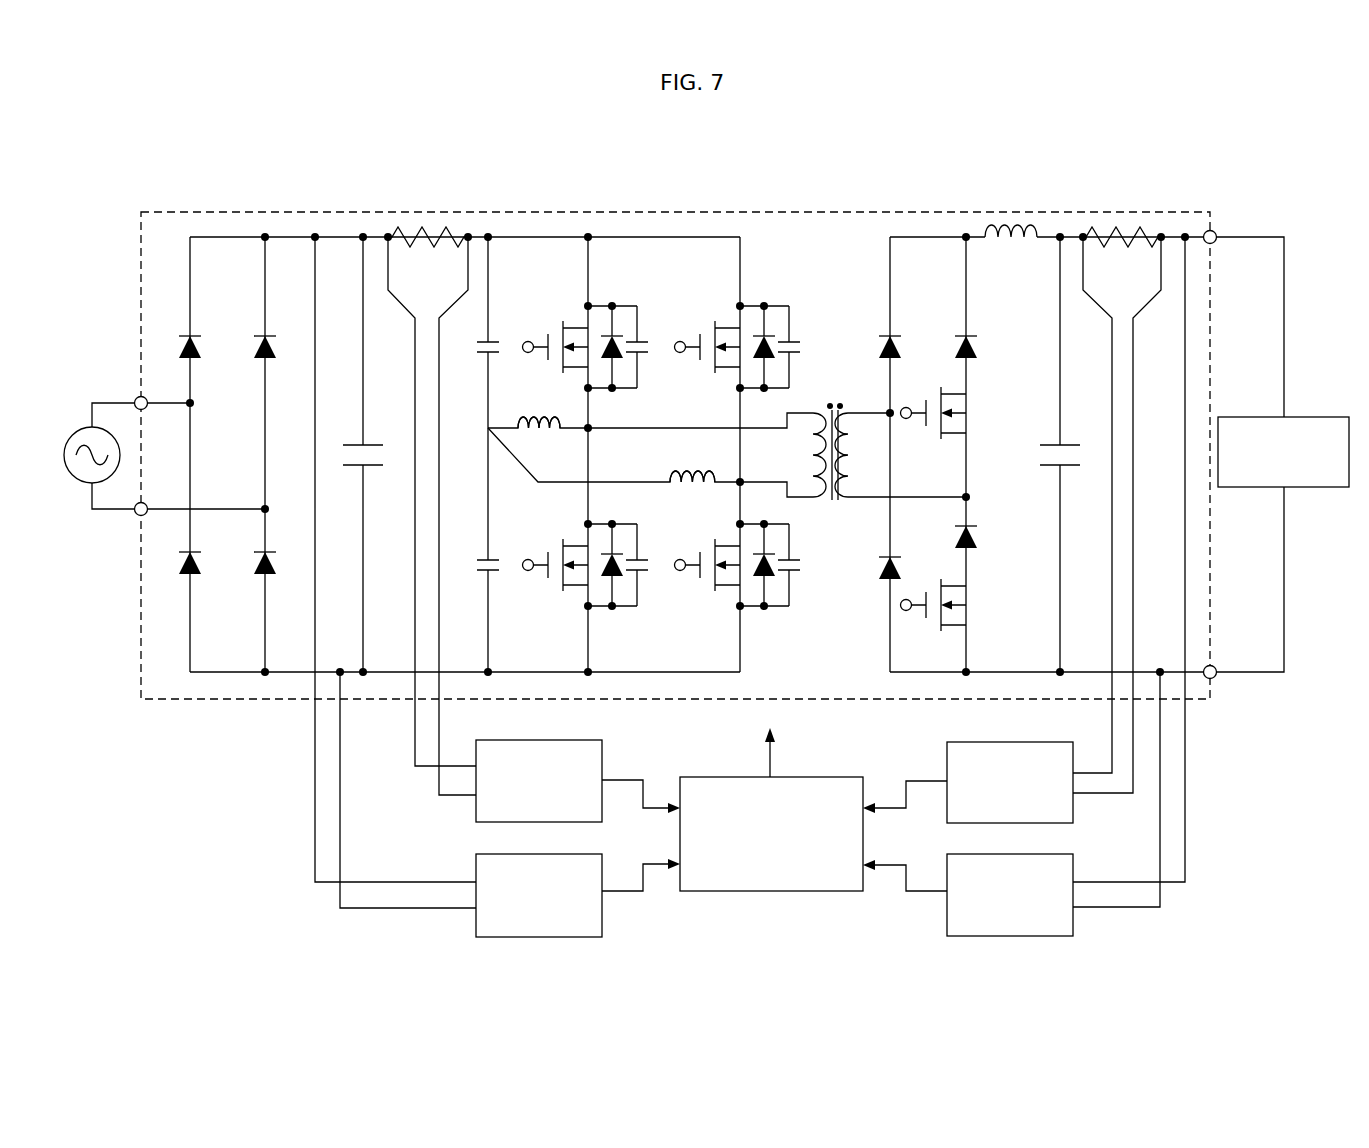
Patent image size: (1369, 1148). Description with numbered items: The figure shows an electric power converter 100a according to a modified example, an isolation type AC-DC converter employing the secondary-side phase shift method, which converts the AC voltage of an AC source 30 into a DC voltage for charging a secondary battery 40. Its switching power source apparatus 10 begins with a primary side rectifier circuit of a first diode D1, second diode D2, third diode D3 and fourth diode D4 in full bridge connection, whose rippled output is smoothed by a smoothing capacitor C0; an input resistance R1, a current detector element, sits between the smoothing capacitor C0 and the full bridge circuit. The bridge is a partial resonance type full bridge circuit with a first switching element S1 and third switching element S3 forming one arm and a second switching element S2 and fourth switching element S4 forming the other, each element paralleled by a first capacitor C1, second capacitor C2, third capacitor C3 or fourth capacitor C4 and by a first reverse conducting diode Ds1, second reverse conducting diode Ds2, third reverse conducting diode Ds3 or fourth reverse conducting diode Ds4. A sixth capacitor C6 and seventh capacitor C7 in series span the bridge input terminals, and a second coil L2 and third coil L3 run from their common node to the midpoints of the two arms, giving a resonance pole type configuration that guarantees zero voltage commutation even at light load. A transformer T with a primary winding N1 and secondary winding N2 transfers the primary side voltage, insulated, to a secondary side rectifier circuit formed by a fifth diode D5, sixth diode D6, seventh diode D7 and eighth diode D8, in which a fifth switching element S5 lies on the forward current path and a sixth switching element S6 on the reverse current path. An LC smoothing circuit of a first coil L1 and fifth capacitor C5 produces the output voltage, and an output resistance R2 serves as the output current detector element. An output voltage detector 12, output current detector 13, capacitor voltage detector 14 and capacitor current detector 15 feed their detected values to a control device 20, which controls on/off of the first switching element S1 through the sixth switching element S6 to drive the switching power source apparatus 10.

The electric power converter 100a is at (806, 193).
The switching power source apparatus 10 is at (1163, 207).
The output voltage detector 12 is at (1074, 869).
The output current detector 13 is at (1046, 742).
The capacitor voltage detector 14 is at (603, 872).
The capacitor current detector 15 is at (577, 741).
The control device 20 is at (813, 776).
The AC source 30 is at (72, 434).
The secondary battery 40 is at (1303, 417).
The first diode D1 is at (175, 347).
The second diode D2 is at (250, 347).
The third diode D3 is at (176, 566).
The fourth diode D4 is at (251, 566).
The fifth diode D5 is at (950, 347).
The sixth diode D6 is at (950, 535).
The seventh diode D7 is at (875, 347).
The eighth diode D8 is at (874, 568).
The smoothing capacitor C0 is at (355, 441).
The first capacitor C1 is at (651, 347).
The second capacitor C2 is at (802, 347).
The third capacitor C3 is at (651, 565).
The fourth capacitor C4 is at (802, 565).
The fifth capacitor C5 is at (1043, 458).
The sixth capacitor C6 is at (473, 347).
The seventh capacitor C7 is at (473, 567).
The input resistance R1 is at (432, 511).
The output resistance R2 is at (1117, 510).
The first coil L1 is at (1011, 247).
The second coil L2 is at (539, 438).
The third coil L3 is at (692, 489).
The first switching element S1 is at (556, 333).
The second switching element S2 is at (708, 333).
The third switching element S3 is at (556, 551).
The fourth switching element S4 is at (708, 551).
The fifth switching element S5 is at (934, 401).
The sixth switching element S6 is at (934, 592).
The first reverse conducting diode Ds1 is at (617, 320).
The second reverse conducting diode Ds2 is at (769, 320).
The third reverse conducting diode Ds3 is at (617, 538).
The fourth reverse conducting diode Ds4 is at (768, 552).
The transformer T is at (874, 436).
The primary winding N1 is at (804, 455).
The secondary winding N2 is at (900, 455).